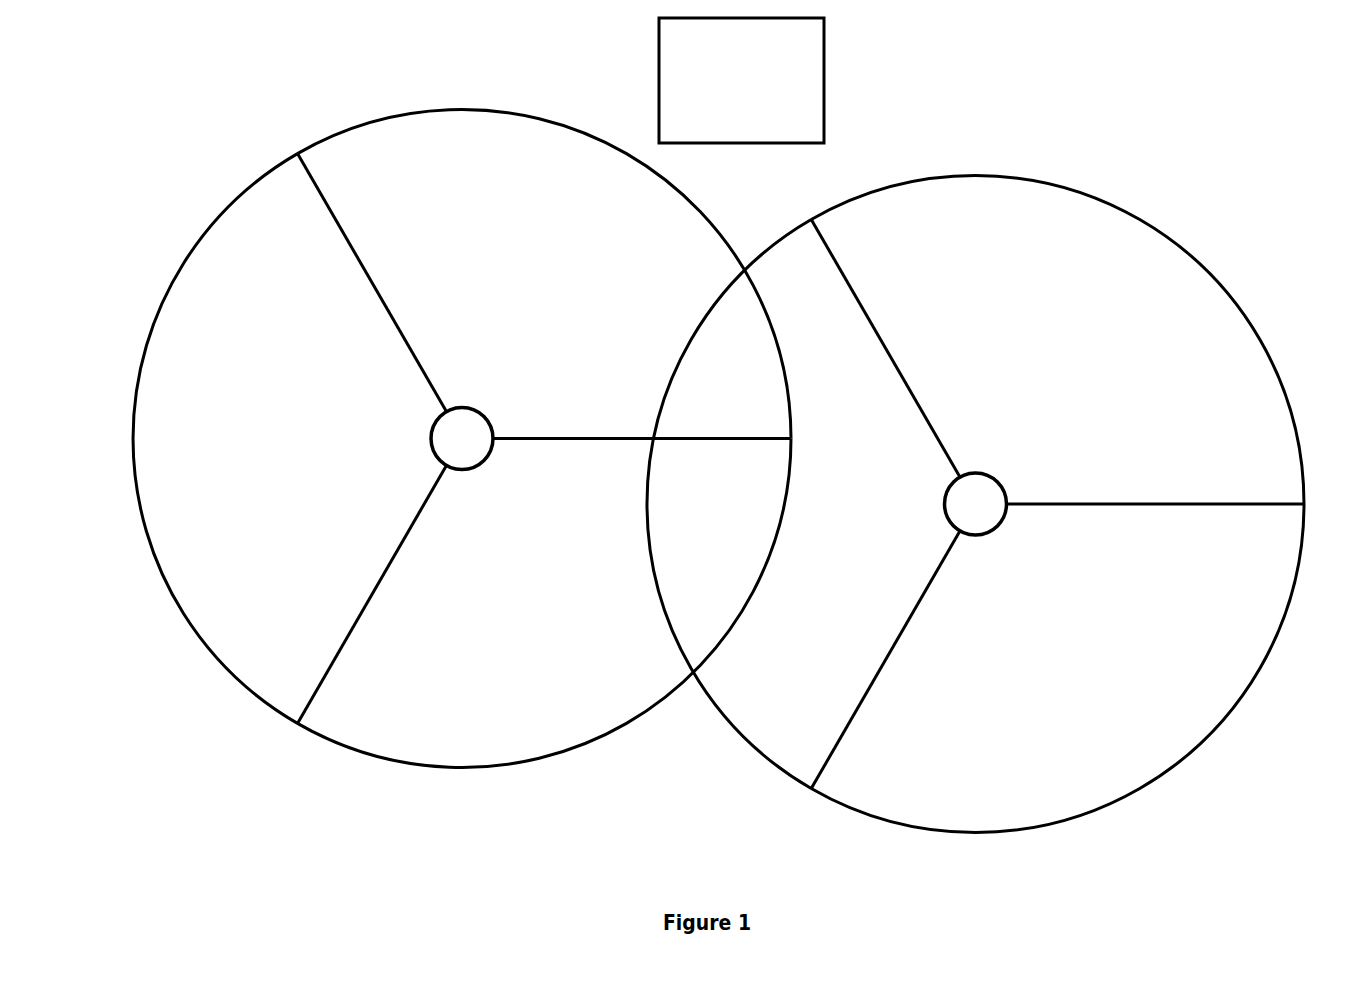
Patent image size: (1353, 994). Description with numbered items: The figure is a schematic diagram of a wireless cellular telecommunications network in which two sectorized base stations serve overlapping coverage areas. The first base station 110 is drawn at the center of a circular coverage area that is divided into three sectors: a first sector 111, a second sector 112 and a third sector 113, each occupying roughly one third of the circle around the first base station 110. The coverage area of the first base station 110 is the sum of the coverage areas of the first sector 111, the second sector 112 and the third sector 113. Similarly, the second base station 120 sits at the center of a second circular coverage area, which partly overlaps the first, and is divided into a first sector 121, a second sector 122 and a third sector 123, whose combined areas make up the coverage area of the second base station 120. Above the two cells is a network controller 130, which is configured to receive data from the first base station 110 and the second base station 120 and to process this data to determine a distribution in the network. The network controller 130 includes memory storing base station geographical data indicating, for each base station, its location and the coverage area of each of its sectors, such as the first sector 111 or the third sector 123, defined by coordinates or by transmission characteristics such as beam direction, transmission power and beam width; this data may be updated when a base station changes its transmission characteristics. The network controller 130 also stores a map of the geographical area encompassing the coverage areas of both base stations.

The first base station 110 is at (462, 439).
The first sector 111 is at (545, 274).
The second sector 112 is at (545, 603).
The third sector 113 is at (215, 439).
The second base station 120 is at (976, 504).
The first sector 121 is at (1057, 339).
The second sector 122 is at (1057, 668).
The third sector 123 is at (729, 504).
The network controller 130 is at (727, 114).